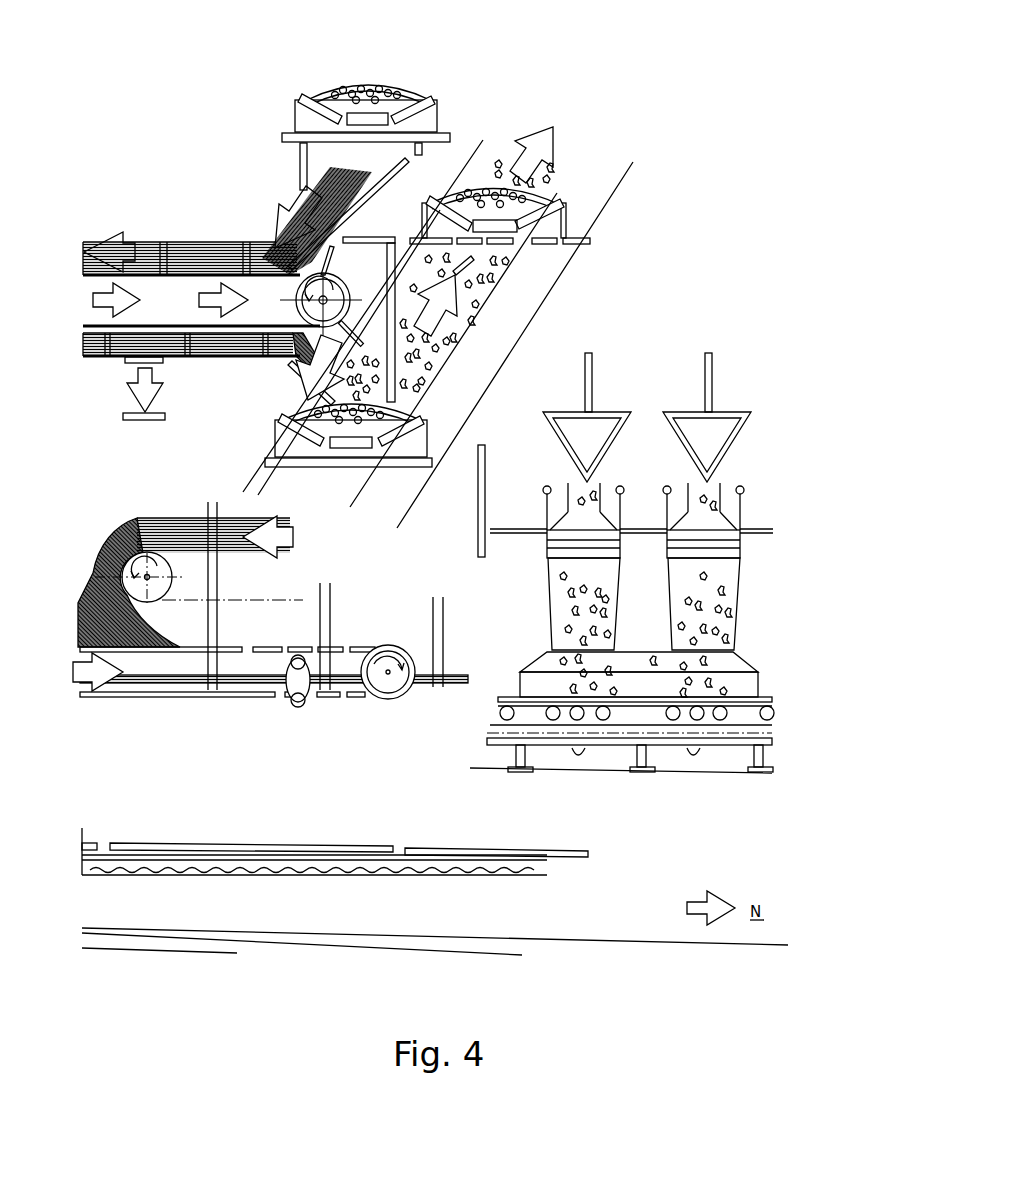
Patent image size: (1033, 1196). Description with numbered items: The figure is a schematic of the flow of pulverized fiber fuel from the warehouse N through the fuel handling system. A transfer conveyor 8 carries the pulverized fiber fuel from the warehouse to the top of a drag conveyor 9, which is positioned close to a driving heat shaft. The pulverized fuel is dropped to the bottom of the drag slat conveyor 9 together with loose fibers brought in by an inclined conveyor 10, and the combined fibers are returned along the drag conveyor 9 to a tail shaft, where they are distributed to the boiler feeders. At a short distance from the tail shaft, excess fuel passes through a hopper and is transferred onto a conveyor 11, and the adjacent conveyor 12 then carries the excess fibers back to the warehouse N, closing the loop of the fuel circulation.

The transfer conveyor 8 is at (367, 80).
The drag conveyor 9 is at (98, 237).
The inclined conveyor 10 is at (93, 298).
The conveyor 11 is at (575, 125).
The conveyor 12 is at (580, 912).